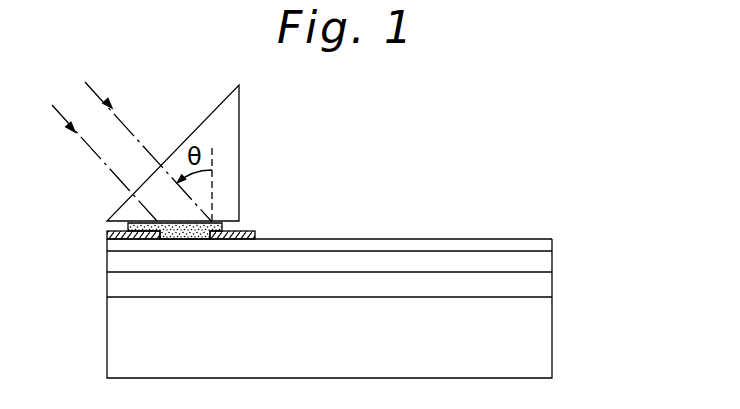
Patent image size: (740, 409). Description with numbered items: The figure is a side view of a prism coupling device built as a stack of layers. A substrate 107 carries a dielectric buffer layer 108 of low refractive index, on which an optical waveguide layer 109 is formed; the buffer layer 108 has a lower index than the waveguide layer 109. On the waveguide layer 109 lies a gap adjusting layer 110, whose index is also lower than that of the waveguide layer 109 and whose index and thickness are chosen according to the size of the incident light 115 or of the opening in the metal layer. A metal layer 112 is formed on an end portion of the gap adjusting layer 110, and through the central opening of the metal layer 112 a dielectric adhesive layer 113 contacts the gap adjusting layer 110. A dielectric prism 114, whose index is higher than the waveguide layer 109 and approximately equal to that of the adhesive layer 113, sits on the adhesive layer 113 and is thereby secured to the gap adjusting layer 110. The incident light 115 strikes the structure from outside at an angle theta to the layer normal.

The substrate 107 is at (546, 345).
The dielectric buffer layer 108 is at (542, 287).
The optical waveguide layer 109 is at (544, 261).
The gap adjusting layer 110 is at (551, 240).
The metal layer 112 is at (250, 233).
The dielectric adhesive layer 113 is at (221, 222).
The dielectric prism 114 is at (239, 130).
The incident light 115 is at (143, 145).